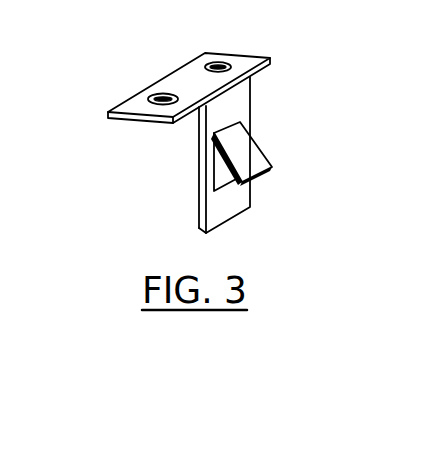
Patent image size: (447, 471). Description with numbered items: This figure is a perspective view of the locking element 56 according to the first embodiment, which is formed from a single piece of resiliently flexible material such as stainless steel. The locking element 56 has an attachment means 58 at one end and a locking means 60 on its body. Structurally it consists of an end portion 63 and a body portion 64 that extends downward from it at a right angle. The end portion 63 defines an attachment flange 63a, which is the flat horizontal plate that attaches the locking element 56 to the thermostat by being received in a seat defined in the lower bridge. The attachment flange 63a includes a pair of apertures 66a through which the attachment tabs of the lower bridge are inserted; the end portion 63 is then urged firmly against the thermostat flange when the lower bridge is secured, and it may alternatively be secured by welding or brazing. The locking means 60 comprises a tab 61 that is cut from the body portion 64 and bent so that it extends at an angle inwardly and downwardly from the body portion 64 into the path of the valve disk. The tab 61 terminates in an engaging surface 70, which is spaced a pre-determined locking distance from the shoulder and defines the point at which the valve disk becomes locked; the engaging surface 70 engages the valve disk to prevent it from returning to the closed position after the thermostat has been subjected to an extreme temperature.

The locking element 56 is at (205, 119).
The attachment means 58 is at (174, 84).
The end portion 63 is at (172, 85).
The attachment flange 63a is at (143, 121).
The apertures 66a is at (150, 93).
The body portion 64 is at (238, 110).
The locking means 60 is at (268, 190).
The tab 61 is at (283, 157).
The engaging surface 70 is at (266, 168).